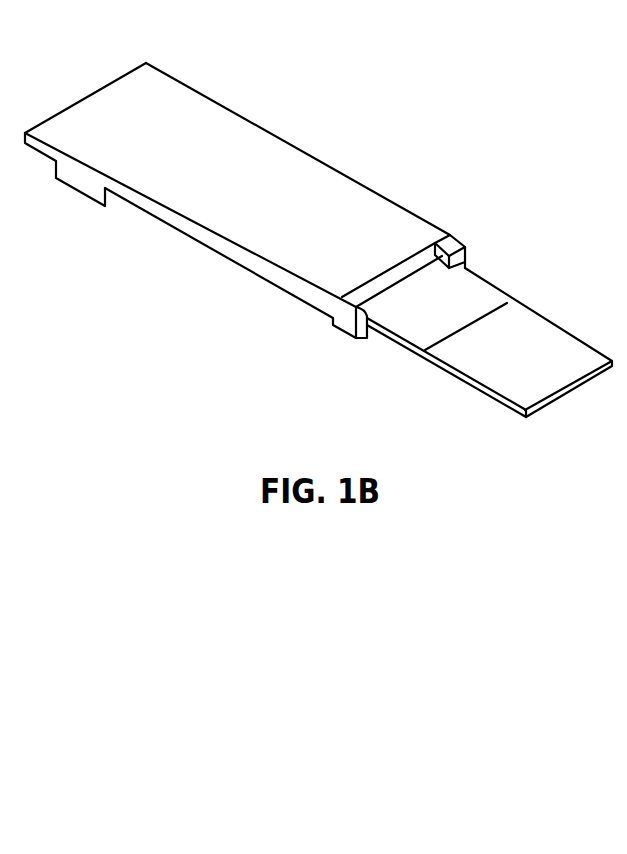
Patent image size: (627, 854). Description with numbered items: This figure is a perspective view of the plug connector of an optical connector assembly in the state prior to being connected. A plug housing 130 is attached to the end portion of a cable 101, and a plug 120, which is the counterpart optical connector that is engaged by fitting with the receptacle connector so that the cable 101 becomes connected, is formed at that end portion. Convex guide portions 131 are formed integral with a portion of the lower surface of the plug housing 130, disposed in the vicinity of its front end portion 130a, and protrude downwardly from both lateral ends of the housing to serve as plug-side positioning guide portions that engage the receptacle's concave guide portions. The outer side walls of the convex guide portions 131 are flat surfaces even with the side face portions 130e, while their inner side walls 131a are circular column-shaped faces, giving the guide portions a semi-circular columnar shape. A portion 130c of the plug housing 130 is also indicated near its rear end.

The cable 101 is at (598, 352).
The plug 120 is at (257, 307).
The plug housing 130 is at (312, 158).
The front end portion 130a is at (100, 90).
The protrusion 130c is at (412, 262).
The side face portion 130e is at (38, 147).
The convex guide portion 131 is at (78, 187).
The inner side wall 131a is at (107, 193).